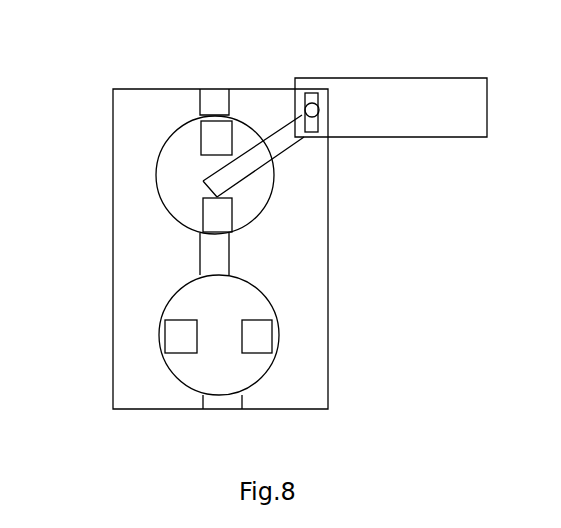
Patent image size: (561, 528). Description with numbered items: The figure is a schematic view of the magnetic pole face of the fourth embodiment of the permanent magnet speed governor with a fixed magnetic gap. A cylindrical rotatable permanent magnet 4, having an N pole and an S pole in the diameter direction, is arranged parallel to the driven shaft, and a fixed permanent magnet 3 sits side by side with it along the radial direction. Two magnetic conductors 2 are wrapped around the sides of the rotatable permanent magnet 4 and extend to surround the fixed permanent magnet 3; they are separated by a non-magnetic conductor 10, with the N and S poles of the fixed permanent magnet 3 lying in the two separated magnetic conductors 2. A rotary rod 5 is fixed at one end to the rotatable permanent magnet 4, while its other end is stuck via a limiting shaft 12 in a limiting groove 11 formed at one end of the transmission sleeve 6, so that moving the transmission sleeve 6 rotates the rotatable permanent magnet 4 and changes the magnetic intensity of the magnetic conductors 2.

The magnetic conductor 2 is at (328, 272).
The fixed permanent magnet 3 is at (275, 350).
The rotatable permanent magnet 4 is at (275, 185).
The rotary rod 5 is at (281, 125).
The transmission sleeve 6 is at (430, 137).
The non-magnetic conductor 10 is at (200, 100).
The limiting groove 11 is at (317, 101).
The limiting shaft 12 is at (310, 104).